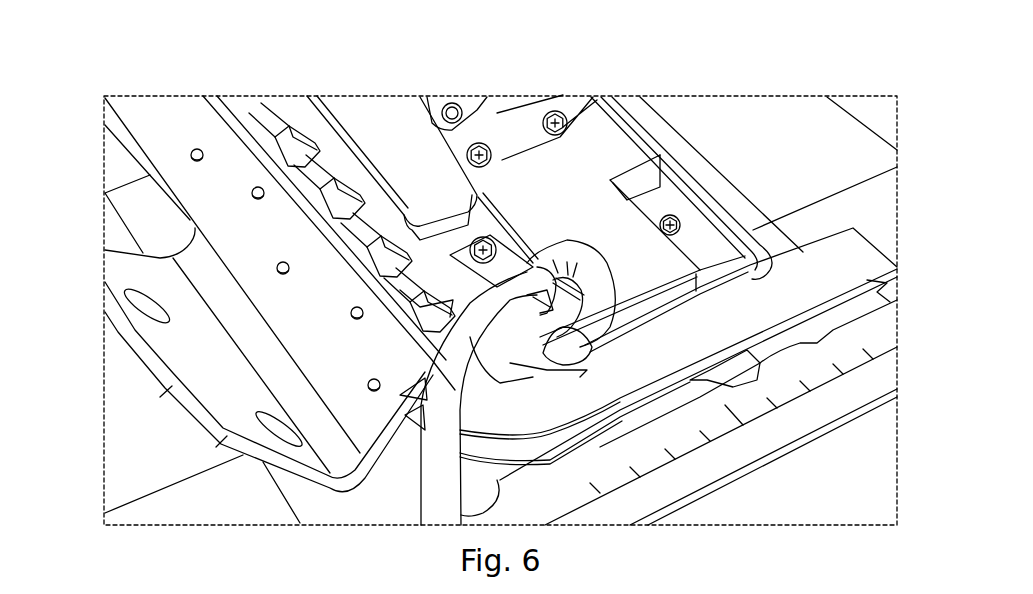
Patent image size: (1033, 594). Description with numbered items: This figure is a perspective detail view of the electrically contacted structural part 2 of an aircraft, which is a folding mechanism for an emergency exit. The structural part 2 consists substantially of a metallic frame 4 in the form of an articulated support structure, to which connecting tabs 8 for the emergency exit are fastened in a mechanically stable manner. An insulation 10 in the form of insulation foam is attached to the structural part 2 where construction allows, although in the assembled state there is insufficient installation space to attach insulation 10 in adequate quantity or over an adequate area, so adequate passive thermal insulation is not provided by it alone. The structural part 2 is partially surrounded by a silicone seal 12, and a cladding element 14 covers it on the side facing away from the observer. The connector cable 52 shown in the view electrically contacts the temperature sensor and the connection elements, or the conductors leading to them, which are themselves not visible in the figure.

The structural part 2 is at (355, 86).
The metallic frame 4 is at (162, 113).
The connecting tabs 8 is at (137, 265).
The insulation 10 is at (347, 113).
The silicone seal 12 is at (863, 253).
The cladding element 14 is at (687, 190).
The connector cable 52 is at (527, 275).